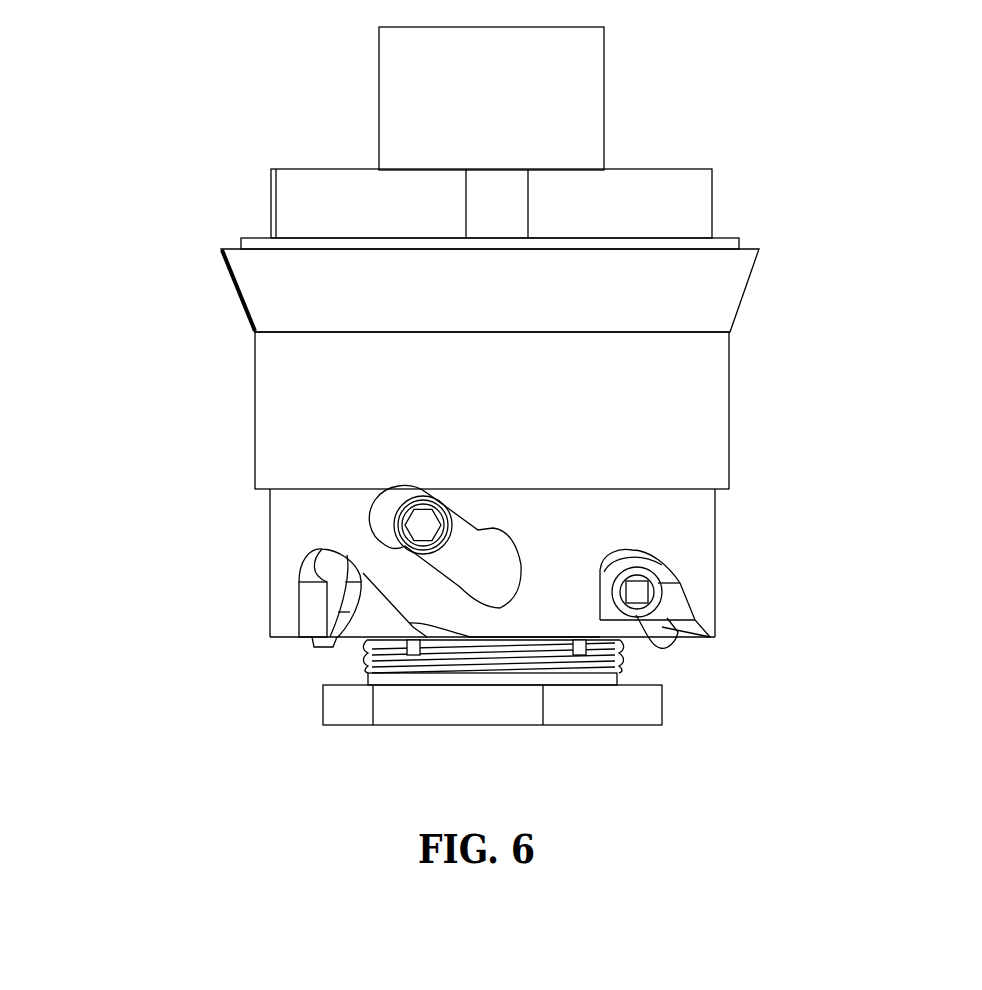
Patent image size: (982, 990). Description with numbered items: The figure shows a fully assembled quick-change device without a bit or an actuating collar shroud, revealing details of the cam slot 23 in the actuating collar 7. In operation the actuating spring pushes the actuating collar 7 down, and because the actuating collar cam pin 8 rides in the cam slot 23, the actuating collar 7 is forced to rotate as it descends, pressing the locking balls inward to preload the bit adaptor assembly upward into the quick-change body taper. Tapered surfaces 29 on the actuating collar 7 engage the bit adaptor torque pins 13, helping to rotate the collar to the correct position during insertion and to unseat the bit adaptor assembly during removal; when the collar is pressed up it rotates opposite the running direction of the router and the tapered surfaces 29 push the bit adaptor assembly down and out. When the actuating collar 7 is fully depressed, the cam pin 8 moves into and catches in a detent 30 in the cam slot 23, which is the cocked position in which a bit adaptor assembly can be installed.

The actuating collar 7 is at (253, 372).
The cam slot 23 is at (367, 500).
The detent 30 is at (515, 530).
The actuating collar cam pin 8 is at (405, 545).
The tapered surfaces 29 is at (405, 640).
The bit adaptor torque pins 13 is at (677, 637).